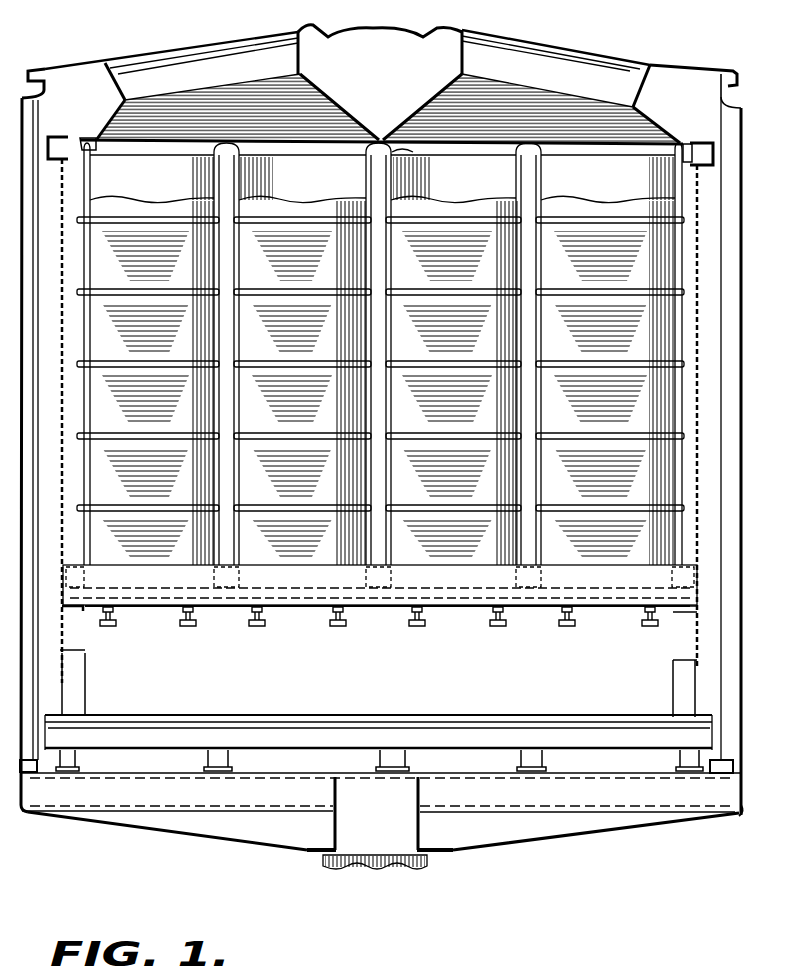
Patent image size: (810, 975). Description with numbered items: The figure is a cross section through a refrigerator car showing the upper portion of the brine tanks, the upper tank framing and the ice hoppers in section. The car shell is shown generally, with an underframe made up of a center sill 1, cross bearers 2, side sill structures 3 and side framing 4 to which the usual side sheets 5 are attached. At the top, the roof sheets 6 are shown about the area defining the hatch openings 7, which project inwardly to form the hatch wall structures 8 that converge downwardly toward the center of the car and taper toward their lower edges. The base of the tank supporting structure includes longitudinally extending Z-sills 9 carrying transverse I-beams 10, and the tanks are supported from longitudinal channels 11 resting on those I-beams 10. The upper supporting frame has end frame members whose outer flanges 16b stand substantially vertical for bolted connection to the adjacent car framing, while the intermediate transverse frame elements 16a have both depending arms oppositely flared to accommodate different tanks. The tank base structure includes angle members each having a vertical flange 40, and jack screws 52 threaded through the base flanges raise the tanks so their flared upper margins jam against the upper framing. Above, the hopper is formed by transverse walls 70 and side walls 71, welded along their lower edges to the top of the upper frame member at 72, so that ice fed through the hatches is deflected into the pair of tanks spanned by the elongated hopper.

The center sill 1 is at (425, 830).
The cross bearers 2 is at (288, 797).
The side sill structures 3 is at (740, 815).
The side framing 4 is at (60, 146).
The side sheets 5 is at (66, 540).
The roof sheets 6 is at (697, 69).
The hatch openings 7 is at (647, 62).
The hatch wall structures 8 is at (638, 93).
The Z-sills 9 is at (392, 762).
The transverse I-beams 10 is at (498, 722).
The channels 11 is at (76, 643).
The intermediate transverse frame elements 16a is at (215, 148).
The outer flanges 16b is at (76, 160).
The vertical flange 40 is at (297, 578).
The jack screws 52 is at (640, 620).
The transverse walls 70 is at (420, 100).
The side walls 71 is at (420, 112).
The weld connection 72 is at (82, 134).